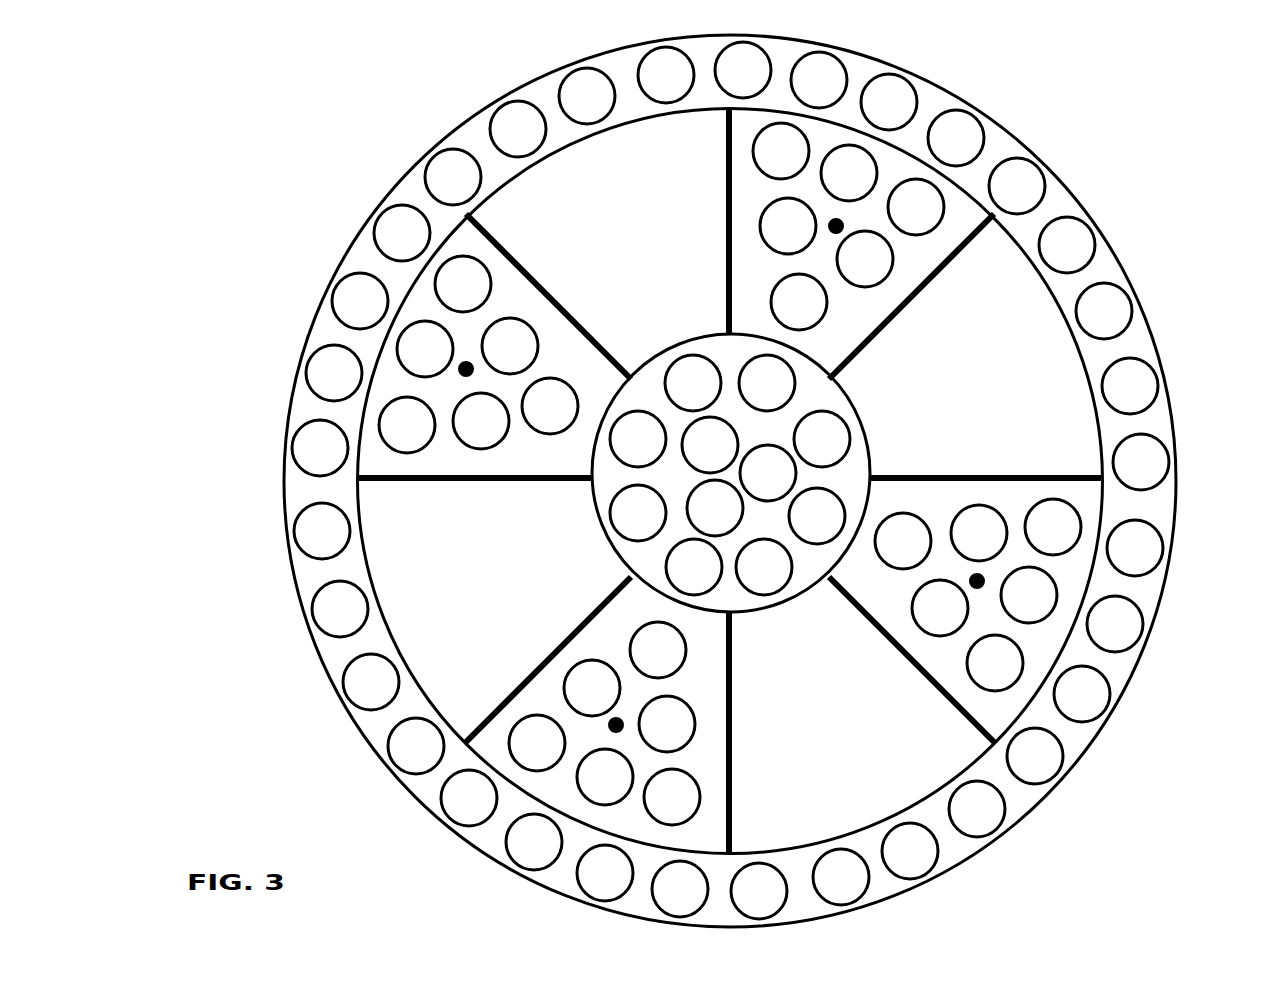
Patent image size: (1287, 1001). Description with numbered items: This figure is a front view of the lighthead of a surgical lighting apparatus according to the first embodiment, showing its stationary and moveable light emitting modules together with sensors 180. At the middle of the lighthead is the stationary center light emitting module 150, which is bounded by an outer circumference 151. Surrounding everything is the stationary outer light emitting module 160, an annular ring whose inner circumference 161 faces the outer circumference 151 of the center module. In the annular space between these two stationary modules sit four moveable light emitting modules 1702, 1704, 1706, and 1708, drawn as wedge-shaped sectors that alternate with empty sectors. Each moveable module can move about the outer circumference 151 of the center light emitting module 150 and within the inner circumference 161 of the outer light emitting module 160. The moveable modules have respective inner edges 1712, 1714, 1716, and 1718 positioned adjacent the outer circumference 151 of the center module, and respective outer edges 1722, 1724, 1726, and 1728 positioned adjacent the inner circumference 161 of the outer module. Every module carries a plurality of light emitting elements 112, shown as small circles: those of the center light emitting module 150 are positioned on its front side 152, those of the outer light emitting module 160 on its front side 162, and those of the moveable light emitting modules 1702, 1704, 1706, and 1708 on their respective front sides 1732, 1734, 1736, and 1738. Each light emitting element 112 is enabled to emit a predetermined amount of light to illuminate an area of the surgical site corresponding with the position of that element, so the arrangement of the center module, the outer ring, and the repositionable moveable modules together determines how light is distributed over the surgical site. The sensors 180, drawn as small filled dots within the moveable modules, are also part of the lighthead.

The light emitting elements 112 is at (1000, 831).
The center light emitting module 150 is at (710, 626).
The outer circumference 151 is at (596, 515).
The front side 152 is at (845, 470).
The outer light emitting module 160 is at (1088, 753).
The inner circumference 161 is at (412, 677).
The front side 162 is at (1024, 797).
The sensors 180 is at (616, 725).
The moveable light emitting module 1702 is at (1029, 466).
The moveable light emitting module 1704 is at (527, 665).
The moveable light emitting module 1706 is at (560, 287).
The moveable light emitting module 1708 is at (936, 277).
The inner edge 1712 is at (1027, 613).
The inner edge 1714 is at (539, 763).
The inner edge 1716 is at (403, 324).
The inner edge 1718 is at (885, 208).
The outer edge 1722 is at (1081, 572).
The outer edge 1724 is at (677, 844).
The outer edge 1726 is at (422, 301).
The outer edge 1728 is at (756, 205).
The front side 1732 is at (1055, 633).
The front side 1734 is at (541, 783).
The front side 1736 is at (376, 402).
The front side 1738 is at (884, 166).